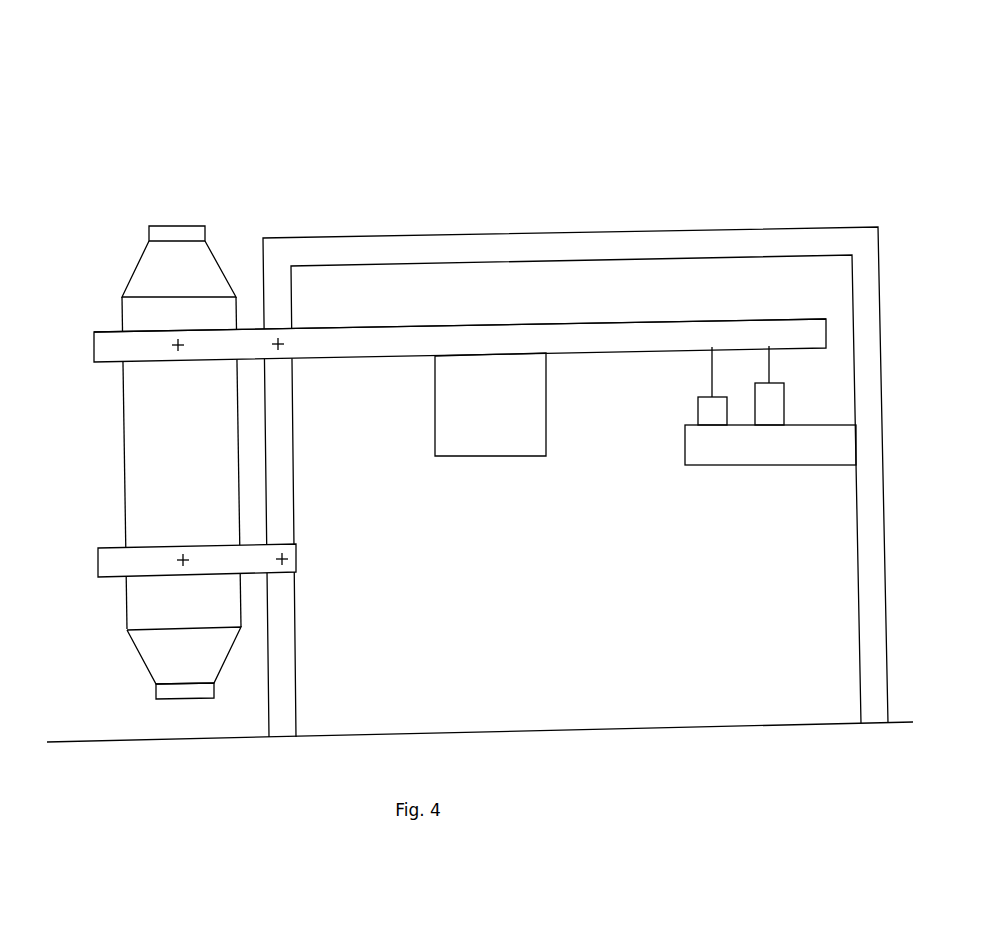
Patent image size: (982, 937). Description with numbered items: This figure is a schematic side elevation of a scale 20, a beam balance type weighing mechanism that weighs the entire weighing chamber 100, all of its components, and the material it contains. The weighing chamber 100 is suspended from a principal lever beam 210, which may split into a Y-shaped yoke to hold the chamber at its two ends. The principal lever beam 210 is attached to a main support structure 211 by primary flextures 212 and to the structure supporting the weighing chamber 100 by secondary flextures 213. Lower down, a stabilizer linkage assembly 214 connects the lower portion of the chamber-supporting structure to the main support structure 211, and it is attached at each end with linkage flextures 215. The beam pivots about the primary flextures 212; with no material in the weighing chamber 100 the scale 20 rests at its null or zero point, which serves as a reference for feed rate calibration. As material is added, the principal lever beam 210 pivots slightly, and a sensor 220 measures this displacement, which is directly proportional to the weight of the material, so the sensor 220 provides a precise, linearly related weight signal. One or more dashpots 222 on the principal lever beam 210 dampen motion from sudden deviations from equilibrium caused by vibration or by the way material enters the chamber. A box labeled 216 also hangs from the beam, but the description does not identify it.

The scale 20 is at (568, 177).
The weighing chamber 100 is at (96, 438).
The principal lever beam 210 is at (585, 337).
The main support structure 211 is at (370, 252).
The primary flextures 212 is at (281, 347).
The secondary flextures 213 is at (444, 296).
The stabilizer linkage assembly 214 is at (235, 557).
The linkage flextures 215 is at (192, 562).
The counterweight 216 is at (506, 416).
The sensor 220 is at (796, 385).
The dashpots 222 is at (713, 412).